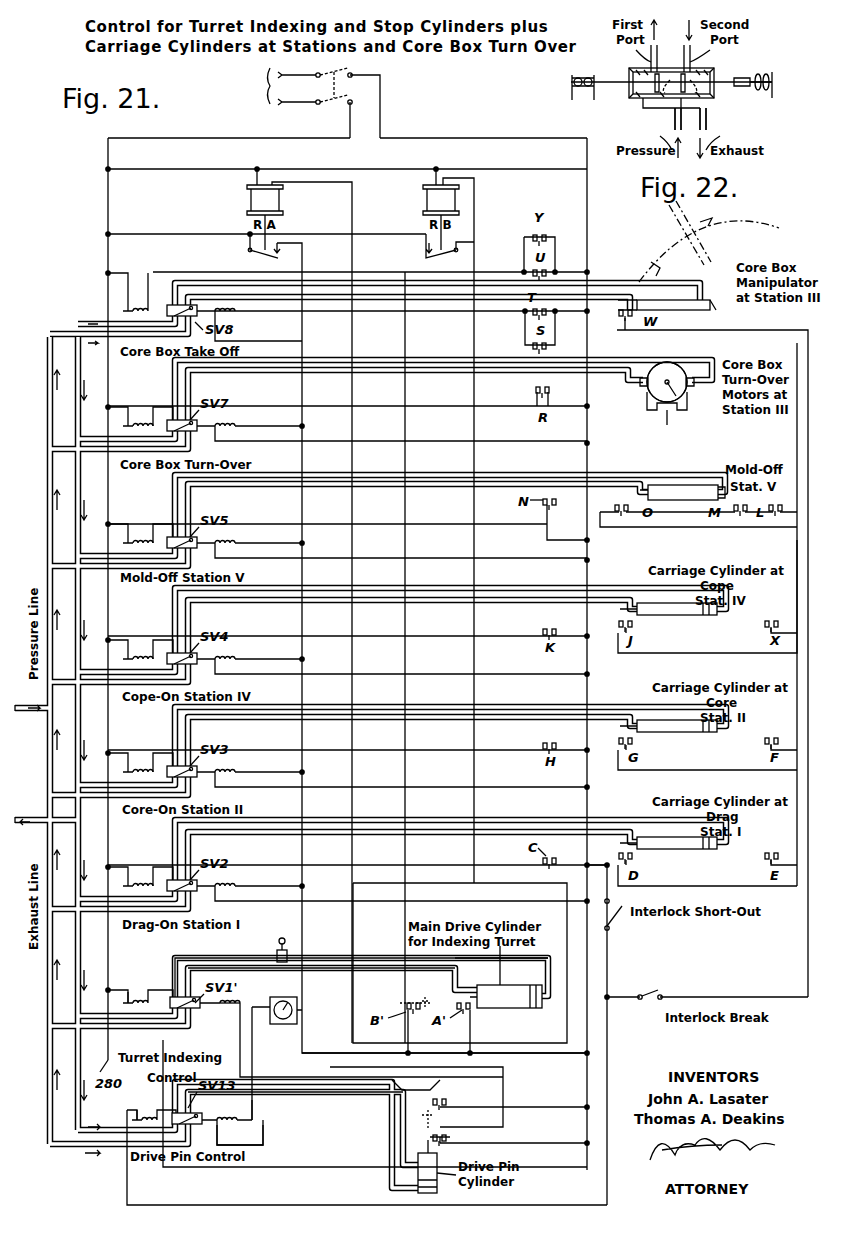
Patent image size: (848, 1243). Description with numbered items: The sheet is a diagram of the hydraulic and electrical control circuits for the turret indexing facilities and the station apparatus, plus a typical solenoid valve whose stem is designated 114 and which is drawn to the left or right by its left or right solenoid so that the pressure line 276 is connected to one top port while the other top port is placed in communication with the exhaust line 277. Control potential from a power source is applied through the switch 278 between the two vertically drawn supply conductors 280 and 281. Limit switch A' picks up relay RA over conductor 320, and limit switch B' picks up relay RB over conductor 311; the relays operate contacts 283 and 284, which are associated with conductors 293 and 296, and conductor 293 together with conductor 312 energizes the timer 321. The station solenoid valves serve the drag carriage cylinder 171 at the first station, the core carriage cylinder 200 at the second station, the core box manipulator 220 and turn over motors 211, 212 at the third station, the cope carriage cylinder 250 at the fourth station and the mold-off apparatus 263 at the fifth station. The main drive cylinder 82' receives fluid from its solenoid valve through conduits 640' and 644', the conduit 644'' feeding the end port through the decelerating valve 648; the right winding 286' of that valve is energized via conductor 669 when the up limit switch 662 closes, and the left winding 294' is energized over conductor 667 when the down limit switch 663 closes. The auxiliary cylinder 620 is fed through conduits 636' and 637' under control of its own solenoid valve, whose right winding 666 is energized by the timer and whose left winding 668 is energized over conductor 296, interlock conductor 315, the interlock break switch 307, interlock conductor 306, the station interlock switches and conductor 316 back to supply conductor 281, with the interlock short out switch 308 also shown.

In FIG. 21, the switch 278 is at (334, 78).
In FIG. 21, the first supply conductor 280 is at (108, 213).
In FIG. 21, the second supply conductor 281 is at (587, 216).
In FIG. 21, the relay contact 283 is at (260, 257).
In FIG. 21, the relay contact 284 is at (460, 258).
In FIG. 21, the conductor 293 is at (302, 348).
In FIG. 21, the conductor 296 is at (405, 348).
In FIG. 21, the conductor 311 is at (474, 218).
In FIG. 21, the conductor 320 is at (352, 216).
In FIG. 21, the conductor 316 is at (595, 866).
In FIG. 21, the core box manipulator 220 is at (648, 298).
In FIG. 21, the interlock conductor 306 is at (760, 330).
In FIG. 21, the turn over motor 211 is at (666, 401).
In FIG. 21, the turn over motor 212 is at (667, 425).
In FIG. 21, the mold-off cylinder 263 is at (665, 500).
In FIG. 21, the cope carriage cylinder 250 is at (678, 616).
In FIG. 21, the core carriage cylinder 200 is at (678, 733).
In FIG. 21, the drag carriage cylinder 171 is at (678, 850).
In FIG. 21, the interlock short out switch 308 is at (612, 905).
In FIG. 21, the interlock break switch 307 is at (652, 992).
In FIG. 21, the interlock conductor 315 is at (607, 1030).
In FIG. 21, the conductor 312 is at (500, 1052).
In FIG. 21, the main drive cylinder 82' is at (506, 1004).
In FIG. 21, the flexible conduit 640' is at (321, 980).
In FIG. 21, the flexible conduit 644' is at (454, 944).
In FIG. 21, the conduit 644'' is at (341, 969).
In FIG. 21, the decelerating valve 648 is at (276, 950).
In FIG. 21, the left winding 294' is at (139, 985).
In FIG. 21, the right winding 286' is at (214, 1018).
In FIG. 21, the timer 321 is at (284, 1025).
In FIG. 21, the left winding 668 is at (144, 1112).
In FIG. 21, the right winding 666 is at (222, 1126).
In FIG. 21, the conduit 636' is at (282, 1113).
In FIG. 21, the conduit 637' is at (295, 1108).
In FIG. 21, the conductor 669 is at (416, 1087).
In FIG. 21, the up limit switch 662 is at (447, 1103).
In FIG. 21, the down limit switch 663 is at (448, 1140).
In FIG. 21, the conductor 667 is at (503, 1082).
In FIG. 21, the auxiliary cylinder 620 is at (418, 1172).
In FIG. 21, the fluid pressure line 276 is at (48, 712).
In FIG. 22, the fluid pressure line 276 is at (672, 118).
In FIG. 21, the fluid exhaust line 277 is at (78, 780).
In FIG. 22, the fluid exhaust line 277 is at (704, 118).
In FIG. 22, the solenoid valve 114 is at (680, 45).